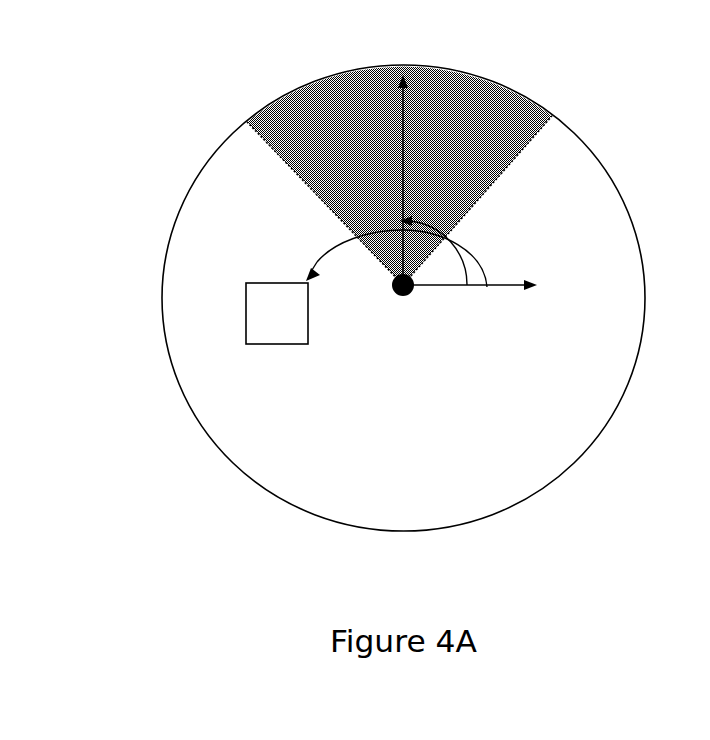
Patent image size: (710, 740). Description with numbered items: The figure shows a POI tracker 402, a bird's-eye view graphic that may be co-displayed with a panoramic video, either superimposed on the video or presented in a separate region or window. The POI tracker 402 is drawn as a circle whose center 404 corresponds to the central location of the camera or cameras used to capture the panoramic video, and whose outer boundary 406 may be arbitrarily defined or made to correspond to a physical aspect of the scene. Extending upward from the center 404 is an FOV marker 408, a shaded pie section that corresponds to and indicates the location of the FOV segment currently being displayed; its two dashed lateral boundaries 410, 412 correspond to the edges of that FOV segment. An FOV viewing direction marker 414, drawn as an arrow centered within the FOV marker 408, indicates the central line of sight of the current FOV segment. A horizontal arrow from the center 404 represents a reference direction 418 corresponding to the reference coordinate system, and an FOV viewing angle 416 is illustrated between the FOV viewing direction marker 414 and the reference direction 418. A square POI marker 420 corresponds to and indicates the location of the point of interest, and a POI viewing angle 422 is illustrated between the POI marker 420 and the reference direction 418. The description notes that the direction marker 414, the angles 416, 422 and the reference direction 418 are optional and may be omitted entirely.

The POI tracker 402 is at (132, 243).
The center 404 is at (408, 297).
The boundary 406 is at (644, 258).
The FOV marker 408 is at (325, 107).
The lateral boundary 410 is at (265, 147).
The lateral boundary 412 is at (526, 143).
The FOV viewing direction marker 414 is at (405, 110).
The FOV viewing angle 416 is at (476, 254).
The reference direction 418 is at (496, 291).
The POI marker 420 is at (287, 344).
The POI viewing angle 422 is at (313, 253).